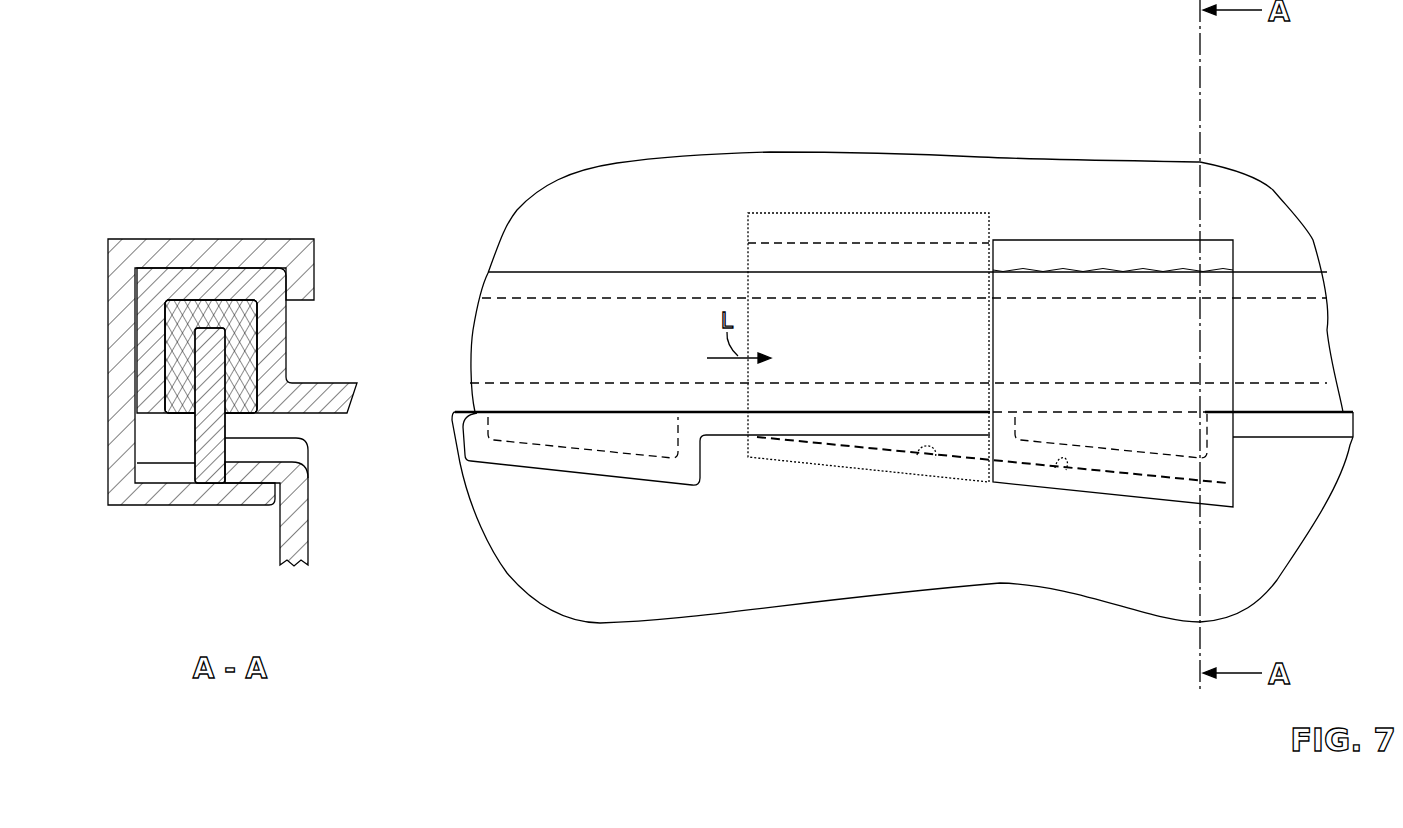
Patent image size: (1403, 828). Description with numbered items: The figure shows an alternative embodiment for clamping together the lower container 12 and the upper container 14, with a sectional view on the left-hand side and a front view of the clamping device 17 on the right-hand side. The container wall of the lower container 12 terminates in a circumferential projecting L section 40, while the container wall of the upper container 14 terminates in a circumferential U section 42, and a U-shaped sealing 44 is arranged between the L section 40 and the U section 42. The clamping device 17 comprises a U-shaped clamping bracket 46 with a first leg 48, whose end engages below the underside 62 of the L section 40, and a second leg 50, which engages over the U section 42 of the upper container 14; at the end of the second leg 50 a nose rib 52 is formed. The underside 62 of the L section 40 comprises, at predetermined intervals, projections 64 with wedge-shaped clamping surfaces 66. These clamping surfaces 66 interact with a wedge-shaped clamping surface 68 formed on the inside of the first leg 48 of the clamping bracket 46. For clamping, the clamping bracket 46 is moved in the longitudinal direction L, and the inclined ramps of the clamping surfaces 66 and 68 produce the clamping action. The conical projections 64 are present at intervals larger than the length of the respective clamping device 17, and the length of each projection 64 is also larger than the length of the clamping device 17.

The lower container 12 is at (300, 520).
The upper container 14 is at (342, 397).
The clamping device 17 is at (823, 180).
The L section 40 is at (213, 433).
The U section 42 is at (280, 348).
The U-shaped sealing 44 is at (180, 355).
The clamping bracket 46 is at (123, 310).
The first leg 48 is at (160, 500).
The second leg 50 is at (258, 250).
The nose rib 52 is at (318, 270).
The underside 62 is at (240, 477).
The projections 64 is at (665, 465).
The clamping surfaces 66 is at (620, 480).
The clamping surface 68 is at (175, 452).